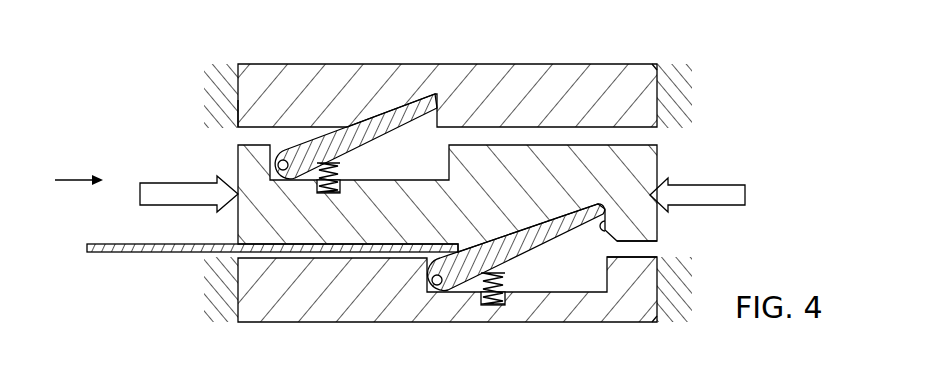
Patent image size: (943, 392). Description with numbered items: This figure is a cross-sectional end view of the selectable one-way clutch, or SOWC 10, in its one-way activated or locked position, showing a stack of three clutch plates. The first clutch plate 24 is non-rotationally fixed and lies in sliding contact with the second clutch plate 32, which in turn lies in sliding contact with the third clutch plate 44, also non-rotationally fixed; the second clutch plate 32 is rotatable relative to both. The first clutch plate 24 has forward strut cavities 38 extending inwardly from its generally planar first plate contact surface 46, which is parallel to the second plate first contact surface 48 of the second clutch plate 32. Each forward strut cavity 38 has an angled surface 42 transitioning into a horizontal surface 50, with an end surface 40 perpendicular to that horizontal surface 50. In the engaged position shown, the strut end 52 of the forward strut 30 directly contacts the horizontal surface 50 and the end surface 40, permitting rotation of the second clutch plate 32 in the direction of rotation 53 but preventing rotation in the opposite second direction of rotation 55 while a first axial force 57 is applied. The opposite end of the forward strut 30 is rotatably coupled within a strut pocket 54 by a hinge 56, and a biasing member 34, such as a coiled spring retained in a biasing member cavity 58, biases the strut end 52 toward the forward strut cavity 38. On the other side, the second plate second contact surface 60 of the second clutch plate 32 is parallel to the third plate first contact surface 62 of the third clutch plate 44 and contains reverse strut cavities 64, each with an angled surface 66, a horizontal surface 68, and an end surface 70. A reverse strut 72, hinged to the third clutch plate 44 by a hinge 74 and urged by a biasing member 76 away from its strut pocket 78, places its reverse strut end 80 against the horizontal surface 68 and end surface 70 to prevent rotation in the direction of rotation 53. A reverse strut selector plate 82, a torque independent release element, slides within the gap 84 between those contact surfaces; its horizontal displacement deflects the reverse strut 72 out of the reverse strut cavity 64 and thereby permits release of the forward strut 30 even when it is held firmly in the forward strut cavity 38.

The SOWC 10 is at (722, 56).
The first clutch plate 24 is at (567, 82).
The forward strut 30 is at (353, 140).
The second clutch plate 32 is at (658, 152).
The biasing member 34 is at (340, 175).
The forward strut cavity 38 is at (374, 106).
The end surface 40 is at (437, 128).
The angled surface 42 is at (352, 100).
The third clutch plate 44 is at (275, 310).
The first plate contact surface 46 is at (245, 131).
The second plate first contact surface 48 is at (616, 140).
The horizontal surface 50 is at (395, 92).
The strut end 52 is at (436, 100).
The direction of rotation 53 is at (745, 195).
The strut pocket 54 is at (430, 185).
The second direction of rotation 55 is at (64, 178).
The hinge 56 is at (277, 164).
The first axial force 57 is at (165, 205).
The biasing member cavity 58 is at (342, 190).
The second plate second contact surface 60 is at (624, 253).
The third plate first contact surface 62 is at (660, 248).
The reverse strut cavity 64 is at (595, 164).
The angled surface 66 is at (530, 218).
The horizontal surface 68 is at (551, 203).
The end surface 70 is at (620, 236).
The reverse strut 72 is at (547, 242).
The hinge 74 is at (437, 287).
The biasing member 76 is at (486, 308).
The strut pocket 78 is at (590, 290).
The reverse strut end 80 is at (560, 213).
The reverse strut selector plate 82 is at (95, 246).
The gap 84 is at (250, 254).